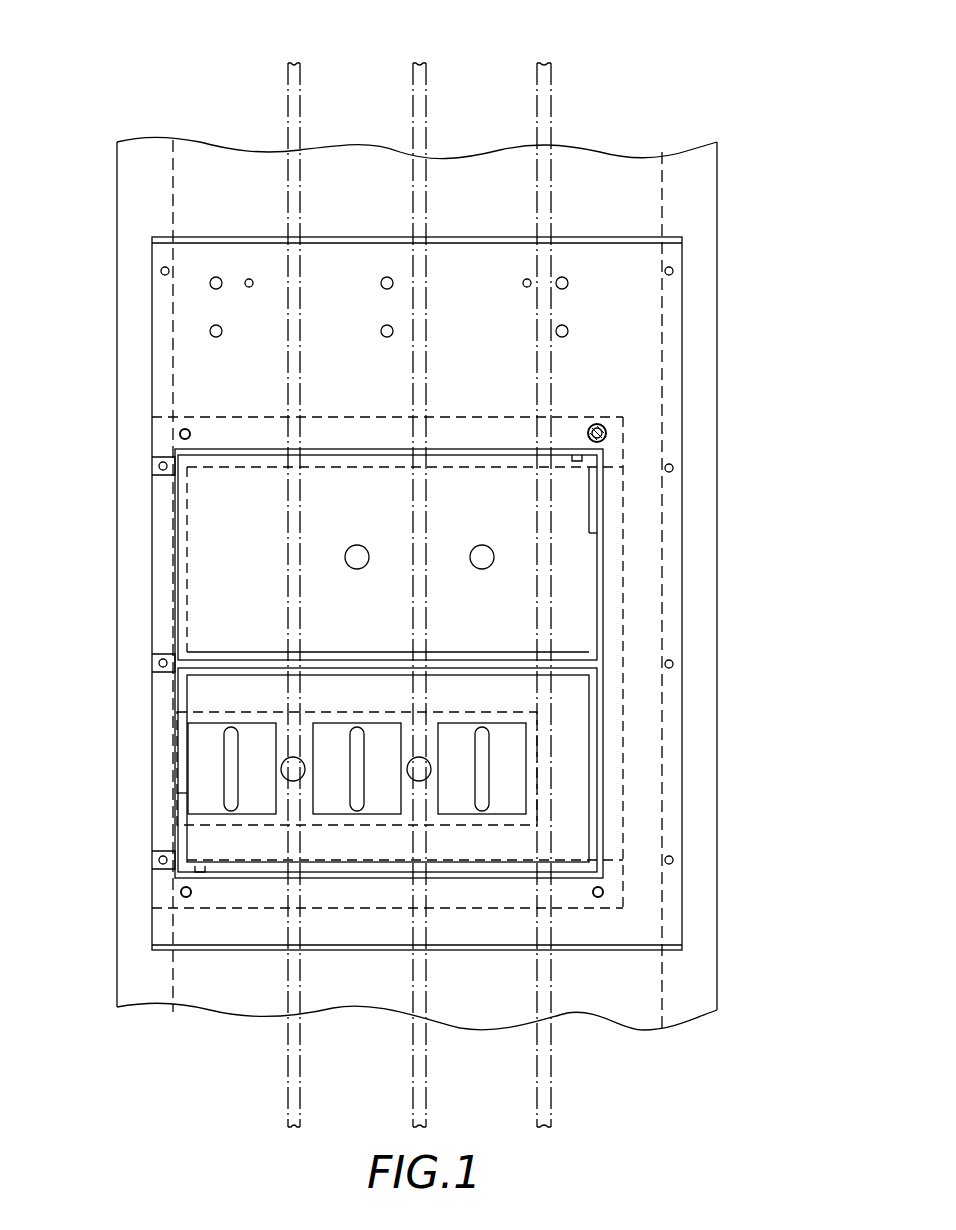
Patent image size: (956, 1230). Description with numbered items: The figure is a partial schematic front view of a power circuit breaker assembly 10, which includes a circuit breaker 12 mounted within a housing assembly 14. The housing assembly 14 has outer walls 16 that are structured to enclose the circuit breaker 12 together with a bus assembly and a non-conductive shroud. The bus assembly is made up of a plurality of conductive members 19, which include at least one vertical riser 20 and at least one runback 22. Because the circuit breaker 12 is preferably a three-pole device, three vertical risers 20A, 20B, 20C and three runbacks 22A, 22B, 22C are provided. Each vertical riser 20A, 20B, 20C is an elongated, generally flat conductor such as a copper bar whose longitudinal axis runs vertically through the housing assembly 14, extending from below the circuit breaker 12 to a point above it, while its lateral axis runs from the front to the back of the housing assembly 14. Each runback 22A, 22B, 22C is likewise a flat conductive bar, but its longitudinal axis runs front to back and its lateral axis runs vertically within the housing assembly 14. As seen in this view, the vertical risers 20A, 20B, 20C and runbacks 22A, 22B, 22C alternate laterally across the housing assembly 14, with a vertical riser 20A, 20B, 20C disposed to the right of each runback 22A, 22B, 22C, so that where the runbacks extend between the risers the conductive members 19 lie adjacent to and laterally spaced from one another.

The power circuit breaker assembly 10 is at (157, 88).
The circuit breaker 12 is at (185, 303).
The housing assembly 14 is at (117, 355).
The outer walls 16 is at (117, 540).
The conductive members 19 is at (551, 130).
The vertical riser 20 is at (367, 581).
The first vertical riser 20A is at (288, 95).
The second vertical riser 20B is at (413, 95).
The third vertical riser 20C is at (537, 95).
The runback 22 is at (486, 748).
The first runback 22A is at (224, 753).
The second runback 22B is at (350, 760).
The third runback 22C is at (475, 760).